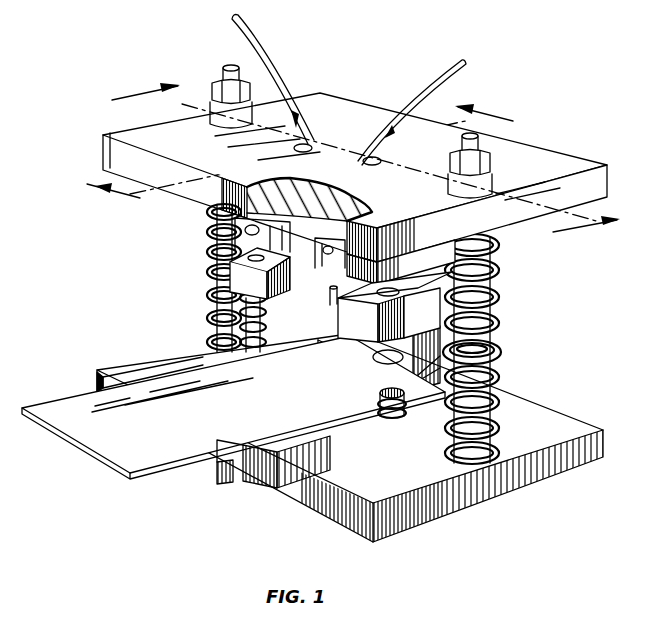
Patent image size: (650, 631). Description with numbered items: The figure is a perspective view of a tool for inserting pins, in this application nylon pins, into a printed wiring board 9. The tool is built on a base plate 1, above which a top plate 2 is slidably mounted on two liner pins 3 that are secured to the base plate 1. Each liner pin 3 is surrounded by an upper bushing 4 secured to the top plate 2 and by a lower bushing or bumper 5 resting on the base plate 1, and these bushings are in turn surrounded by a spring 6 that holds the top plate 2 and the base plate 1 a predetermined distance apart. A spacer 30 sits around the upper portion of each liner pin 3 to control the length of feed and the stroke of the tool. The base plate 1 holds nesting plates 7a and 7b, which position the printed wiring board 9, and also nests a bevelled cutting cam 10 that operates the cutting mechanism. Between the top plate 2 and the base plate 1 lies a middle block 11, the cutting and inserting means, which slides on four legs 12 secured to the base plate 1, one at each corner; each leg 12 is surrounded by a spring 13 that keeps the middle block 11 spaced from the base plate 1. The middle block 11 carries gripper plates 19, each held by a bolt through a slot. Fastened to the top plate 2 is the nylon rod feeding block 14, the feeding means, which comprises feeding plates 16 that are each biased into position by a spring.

The base plate 1 is at (505, 482).
The top plate 2 is at (587, 152).
The liner pin 3 is at (197, 240).
The upper bushing 4 is at (210, 220).
The lower bushing or bumper 5 is at (207, 305).
The spring 6 is at (208, 257).
The nesting plate 7a is at (418, 407).
The nesting plate 7b is at (278, 478).
The printed wiring board 9 is at (50, 410).
The bevelled cutting cam 10 is at (501, 362).
The middle block 11 is at (422, 313).
The leg 12 is at (385, 423).
The spring 13 is at (398, 428).
The nylon rod feeding block 14 is at (401, 262).
The feeding plate 16 is at (300, 261).
The gripper plate 19 is at (341, 295).
The spacer 30 is at (492, 172).